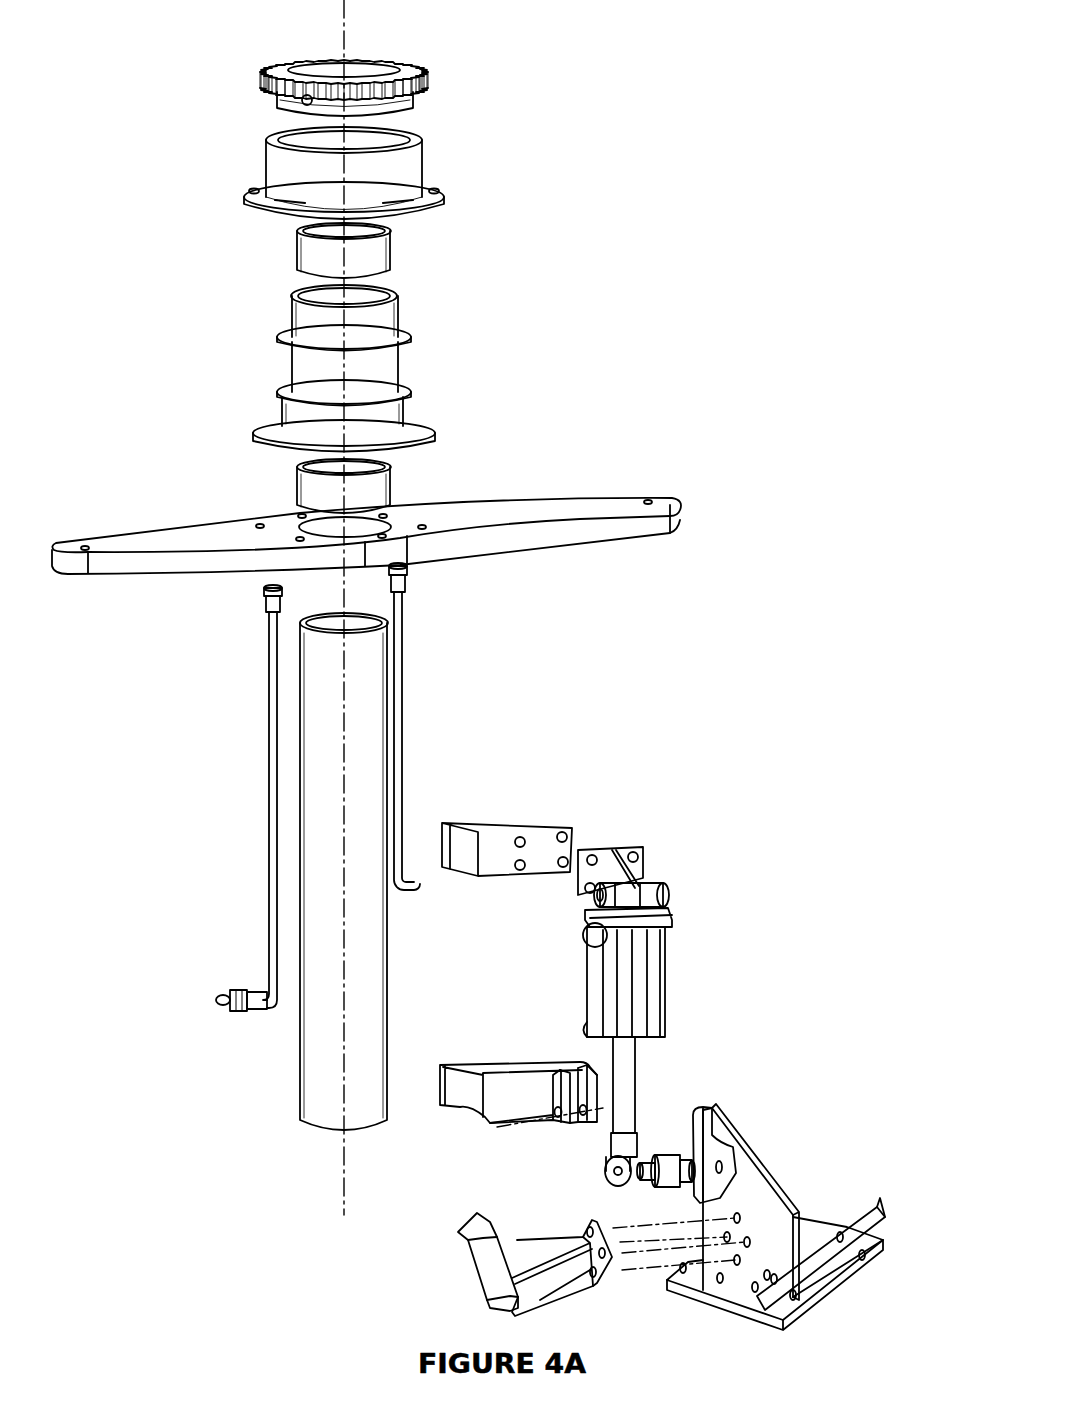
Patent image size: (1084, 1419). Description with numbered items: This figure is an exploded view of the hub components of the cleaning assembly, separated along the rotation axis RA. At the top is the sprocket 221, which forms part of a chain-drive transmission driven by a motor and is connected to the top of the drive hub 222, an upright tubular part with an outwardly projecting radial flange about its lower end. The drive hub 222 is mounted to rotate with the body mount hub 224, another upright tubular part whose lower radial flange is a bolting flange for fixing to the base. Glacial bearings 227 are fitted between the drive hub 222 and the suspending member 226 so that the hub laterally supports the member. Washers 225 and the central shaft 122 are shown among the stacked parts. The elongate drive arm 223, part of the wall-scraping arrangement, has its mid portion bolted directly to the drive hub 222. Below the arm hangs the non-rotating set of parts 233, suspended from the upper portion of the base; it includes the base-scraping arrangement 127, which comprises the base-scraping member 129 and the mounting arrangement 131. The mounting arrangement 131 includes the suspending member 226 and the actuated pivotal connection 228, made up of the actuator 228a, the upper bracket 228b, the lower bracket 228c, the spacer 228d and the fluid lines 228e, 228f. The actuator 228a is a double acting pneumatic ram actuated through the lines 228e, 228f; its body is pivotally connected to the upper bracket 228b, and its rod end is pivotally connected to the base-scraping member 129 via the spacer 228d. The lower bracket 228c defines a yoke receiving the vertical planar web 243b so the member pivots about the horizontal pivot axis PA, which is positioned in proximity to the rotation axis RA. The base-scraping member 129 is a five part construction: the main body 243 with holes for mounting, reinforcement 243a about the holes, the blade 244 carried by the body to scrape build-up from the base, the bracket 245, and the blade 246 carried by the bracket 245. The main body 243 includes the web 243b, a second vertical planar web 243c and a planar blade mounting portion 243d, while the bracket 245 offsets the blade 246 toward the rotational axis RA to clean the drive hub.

The sprocket 221 is at (280, 103).
The body mount hub 224 is at (413, 160).
The glacial bearings 227 is at (313, 252).
The drive hub 222 is at (397, 312).
The thrust washer 225 is at (413, 399).
The elongate drive arm 223 is at (610, 502).
The mounting arrangement 131 is at (730, 614).
The non-rotating set of parts 233 is at (640, 673).
The main shaft 122 is at (330, 1080).
The actuated pivotal connection 228 is at (715, 830).
The actuator 228a is at (667, 947).
The upper bracket 228b is at (525, 828).
The lower bracket 228c is at (463, 1108).
The spacer 228d is at (665, 1152).
The fluid line 228e is at (402, 625).
The fluid line 228f is at (270, 684).
The suspending member 226 is at (302, 1026).
The rotation axis RA is at (338, 1160).
The pivot axis PA is at (552, 1117).
The bracket 245 is at (515, 1240).
The blade 246 is at (480, 1278).
The base-scraping arrangement 127 is at (840, 1093).
The base-scraping member 129 is at (908, 1197).
The main body 243 is at (735, 1123).
The reinforcement 243a is at (703, 1110).
The vertical planar web 243b is at (762, 1150).
The vertical planar web 243c is at (813, 1217).
The planar blade mounting portion 243d is at (837, 1280).
The blade 244 is at (878, 1206).